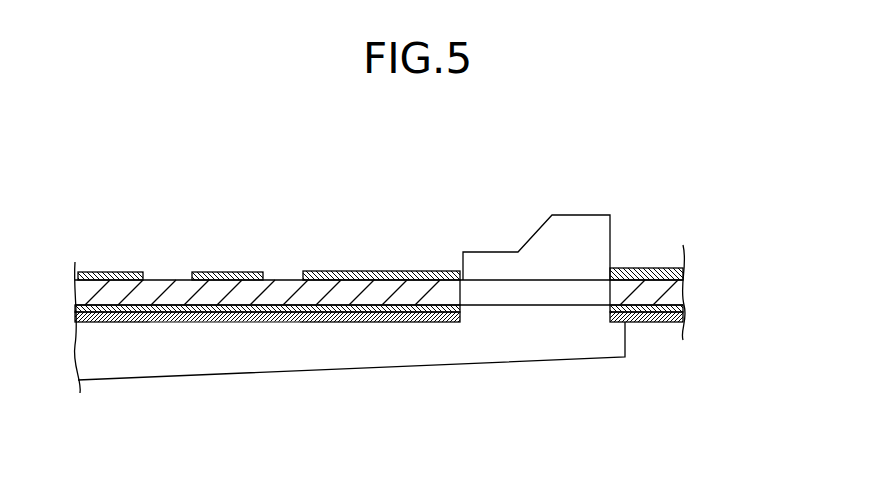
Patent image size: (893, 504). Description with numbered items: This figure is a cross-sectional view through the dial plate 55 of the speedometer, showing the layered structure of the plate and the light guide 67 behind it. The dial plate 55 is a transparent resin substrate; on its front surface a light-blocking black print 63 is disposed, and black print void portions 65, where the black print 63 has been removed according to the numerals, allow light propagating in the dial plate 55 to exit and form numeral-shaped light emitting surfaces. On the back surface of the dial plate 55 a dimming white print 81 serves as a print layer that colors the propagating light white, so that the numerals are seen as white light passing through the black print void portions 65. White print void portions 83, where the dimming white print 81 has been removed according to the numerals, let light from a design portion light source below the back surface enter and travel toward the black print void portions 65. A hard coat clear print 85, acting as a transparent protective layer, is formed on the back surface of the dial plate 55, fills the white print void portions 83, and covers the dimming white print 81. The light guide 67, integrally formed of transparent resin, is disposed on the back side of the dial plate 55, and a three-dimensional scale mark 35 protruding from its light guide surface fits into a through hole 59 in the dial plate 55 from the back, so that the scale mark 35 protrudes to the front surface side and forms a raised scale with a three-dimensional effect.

The three-dimensional scale mark 35 is at (552, 210).
The dial plate 55 is at (692, 285).
The through hole 59 is at (598, 288).
The light-blocking black print 63 is at (380, 272).
The black print void portion 65 is at (175, 277).
The light guide 67 is at (513, 368).
The dimming white print 81 is at (353, 323).
The white print void portion 83 is at (158, 325).
The hard coat clear print 85 is at (422, 323).